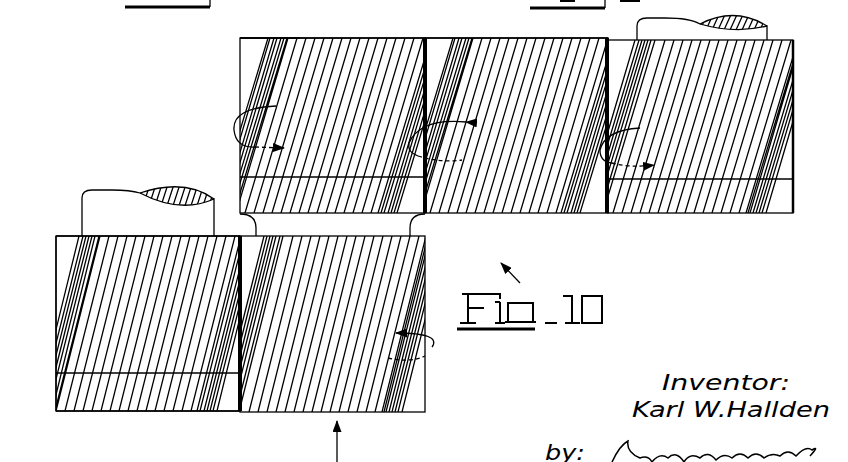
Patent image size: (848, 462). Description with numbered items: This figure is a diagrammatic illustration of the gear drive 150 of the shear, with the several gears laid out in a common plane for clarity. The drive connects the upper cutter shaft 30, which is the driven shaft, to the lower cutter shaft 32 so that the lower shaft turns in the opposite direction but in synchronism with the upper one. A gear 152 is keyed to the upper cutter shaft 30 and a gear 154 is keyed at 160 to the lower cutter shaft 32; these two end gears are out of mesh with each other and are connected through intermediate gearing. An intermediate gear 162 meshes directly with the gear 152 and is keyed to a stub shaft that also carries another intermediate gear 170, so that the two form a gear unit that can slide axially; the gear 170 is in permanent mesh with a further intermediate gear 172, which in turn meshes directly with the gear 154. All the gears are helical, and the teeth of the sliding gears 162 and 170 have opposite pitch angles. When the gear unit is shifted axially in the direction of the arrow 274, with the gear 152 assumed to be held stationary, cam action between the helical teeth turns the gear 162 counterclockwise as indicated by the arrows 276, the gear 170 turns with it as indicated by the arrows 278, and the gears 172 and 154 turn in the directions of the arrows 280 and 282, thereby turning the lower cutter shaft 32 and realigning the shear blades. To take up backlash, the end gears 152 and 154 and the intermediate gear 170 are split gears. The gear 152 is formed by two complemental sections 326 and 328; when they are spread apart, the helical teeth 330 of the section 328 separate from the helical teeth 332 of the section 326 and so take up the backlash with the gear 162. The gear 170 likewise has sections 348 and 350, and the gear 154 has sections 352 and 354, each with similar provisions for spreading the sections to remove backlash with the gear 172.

The upper cutter shaft 30 is at (113, 204).
The lower cutter shaft 32 is at (771, 25).
The gear drive 150 is at (525, 279).
The gear 152 is at (117, 403).
The gear 154 is at (722, 201).
The key 160 is at (410, 30).
The intermediate gear 162 is at (428, 387).
The intermediate gear 170 is at (239, 76).
The intermediate gear 172 is at (490, 54).
The arrow 274 is at (337, 450).
The arrows 276 is at (432, 347).
The arrows 278 is at (233, 133).
The arrow 280 is at (445, 103).
The arrow 282 is at (640, 128).
The gear section 326 is at (68, 293).
The gear section 328 is at (62, 388).
The helical teeth 330 is at (190, 398).
The helical teeth 332 is at (157, 258).
The gear section 348 is at (262, 52).
The gear section 350 is at (256, 187).
The gear section 352 is at (775, 129).
The gear section 354 is at (780, 197).